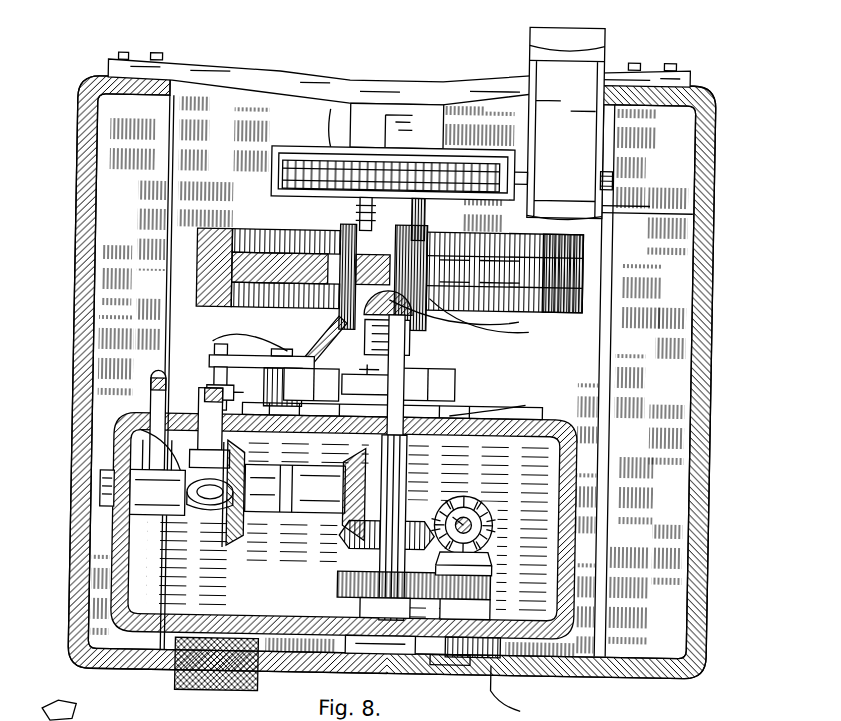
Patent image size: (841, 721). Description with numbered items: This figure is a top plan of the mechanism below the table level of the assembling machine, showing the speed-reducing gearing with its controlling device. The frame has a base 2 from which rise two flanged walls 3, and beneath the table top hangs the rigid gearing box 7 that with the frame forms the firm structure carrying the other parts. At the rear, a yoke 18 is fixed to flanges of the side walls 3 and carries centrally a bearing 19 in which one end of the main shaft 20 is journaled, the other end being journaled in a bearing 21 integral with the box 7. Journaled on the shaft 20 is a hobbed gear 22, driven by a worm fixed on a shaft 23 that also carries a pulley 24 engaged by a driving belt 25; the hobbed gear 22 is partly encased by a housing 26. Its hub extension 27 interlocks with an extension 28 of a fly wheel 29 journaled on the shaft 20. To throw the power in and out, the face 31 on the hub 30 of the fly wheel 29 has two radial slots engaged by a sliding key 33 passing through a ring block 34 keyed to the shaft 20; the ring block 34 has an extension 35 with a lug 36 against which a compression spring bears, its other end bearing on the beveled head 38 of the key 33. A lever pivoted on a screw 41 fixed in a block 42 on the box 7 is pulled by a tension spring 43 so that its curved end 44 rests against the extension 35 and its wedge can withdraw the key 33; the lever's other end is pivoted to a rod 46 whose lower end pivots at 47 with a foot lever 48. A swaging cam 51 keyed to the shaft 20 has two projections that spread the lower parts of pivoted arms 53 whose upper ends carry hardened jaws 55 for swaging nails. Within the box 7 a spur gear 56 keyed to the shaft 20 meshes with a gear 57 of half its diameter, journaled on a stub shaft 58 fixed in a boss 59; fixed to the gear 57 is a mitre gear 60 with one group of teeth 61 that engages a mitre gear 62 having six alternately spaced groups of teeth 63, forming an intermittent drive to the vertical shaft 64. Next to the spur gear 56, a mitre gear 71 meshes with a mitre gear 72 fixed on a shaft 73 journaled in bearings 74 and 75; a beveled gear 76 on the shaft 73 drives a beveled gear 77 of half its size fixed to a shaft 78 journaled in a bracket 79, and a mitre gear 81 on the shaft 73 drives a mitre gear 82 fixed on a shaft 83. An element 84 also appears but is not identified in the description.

The base 2 is at (552, 383).
The flanged walls 3 is at (82, 147).
The gearing box 7 is at (114, 541).
The yoke 18 is at (264, 86).
The bearing 19 is at (397, 126).
The shaft 20 is at (396, 135).
The bearing 21 is at (405, 654).
The hobbed gear 22 is at (296, 172).
The shaft 23 is at (609, 179).
The pulley 24 is at (647, 208).
The driving belt 25 is at (566, 123).
The housing 26 is at (329, 152).
The hub extension 27 is at (353, 218).
The extension 28 is at (382, 228).
The fly wheel 29 is at (581, 266).
The hub 30 is at (343, 296).
The face 31 is at (347, 341).
The sliding key 33 is at (467, 318).
The ring block 34 is at (506, 321).
The extension 35 is at (411, 354).
The lug 36 is at (441, 370).
The head 38 is at (82, 713).
The screw 41 is at (243, 338).
The block 42 is at (282, 387).
The tension spring 43 is at (293, 343).
The curved end 44 is at (209, 361).
The rod 46 is at (214, 388).
The pivotal engagement 47 is at (238, 386).
The foot lever 48 is at (223, 404).
The swaging cam 51 is at (500, 405).
The arms 53 is at (392, 392).
The hardened jaws 55 is at (336, 409).
The spur gear 56 is at (414, 595).
The gear 57 is at (496, 656).
The stub shaft 58 is at (471, 666).
The boss 59 is at (534, 693).
The mitre gear 60 is at (491, 559).
The group of teeth 61 is at (489, 551).
The mitre gear 62 is at (493, 519).
The groups of teeth 63 is at (473, 503).
The vertical shaft 64 is at (448, 509).
The mitre gear 71 is at (358, 546).
The mitre gear 72 is at (355, 529).
The shaft 73 is at (155, 504).
The bearing 74 is at (288, 517).
The bearing 75 is at (102, 487).
The beveled gear 76 is at (241, 541).
The beveled gear 77 is at (217, 508).
The shaft 78 is at (166, 429).
The bracket 79 is at (226, 448).
The mitre gear 81 is at (186, 519).
The mitre gear 82 is at (166, 524).
The shaft 83 is at (159, 372).
The arm 84 is at (152, 466).